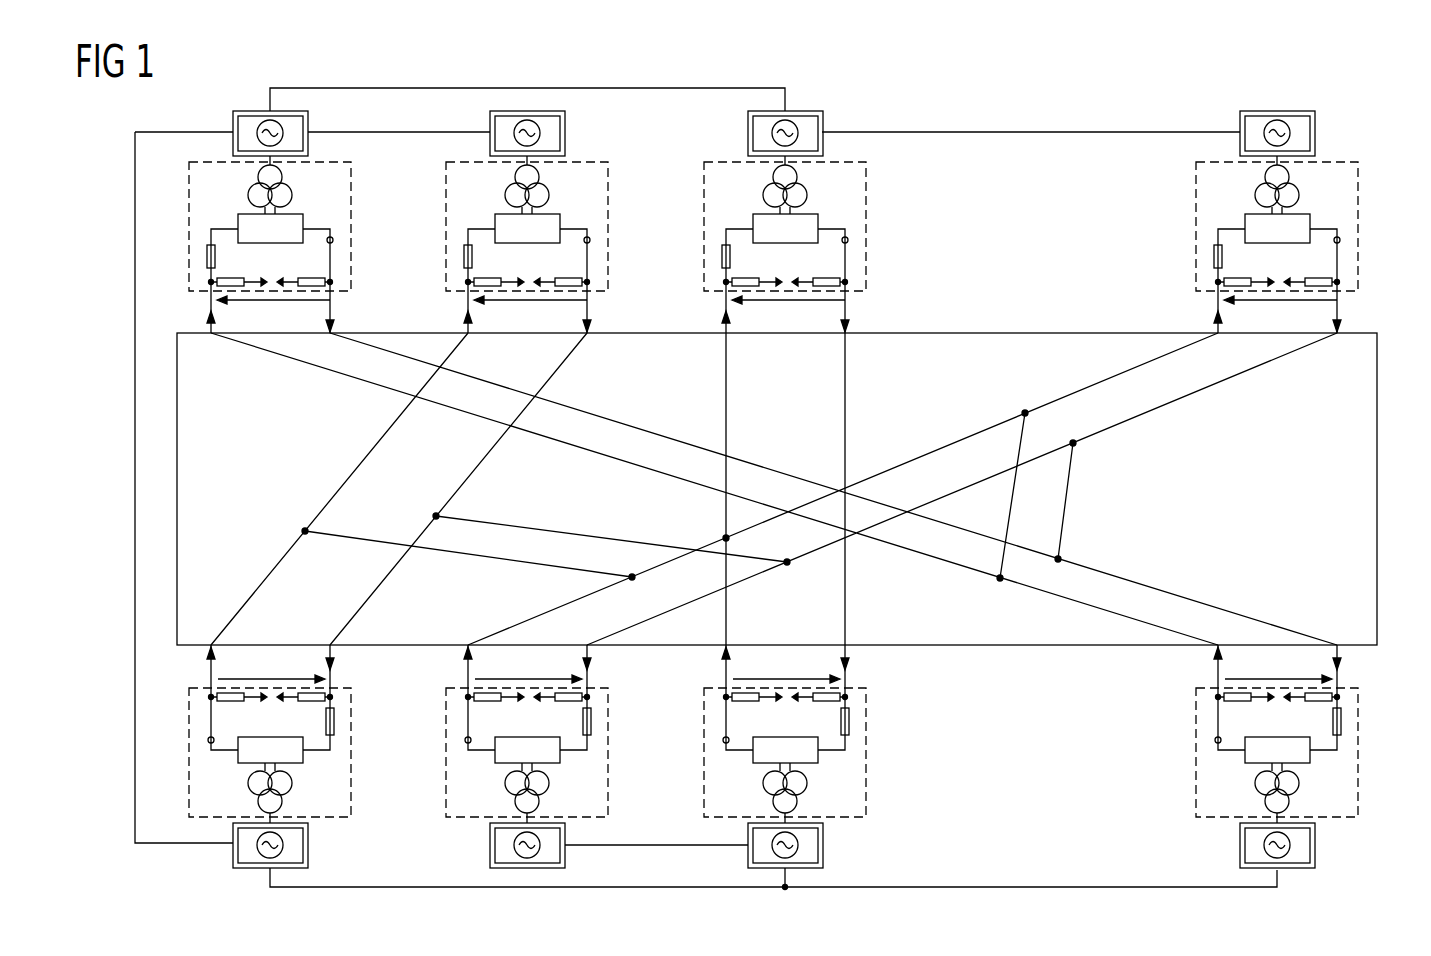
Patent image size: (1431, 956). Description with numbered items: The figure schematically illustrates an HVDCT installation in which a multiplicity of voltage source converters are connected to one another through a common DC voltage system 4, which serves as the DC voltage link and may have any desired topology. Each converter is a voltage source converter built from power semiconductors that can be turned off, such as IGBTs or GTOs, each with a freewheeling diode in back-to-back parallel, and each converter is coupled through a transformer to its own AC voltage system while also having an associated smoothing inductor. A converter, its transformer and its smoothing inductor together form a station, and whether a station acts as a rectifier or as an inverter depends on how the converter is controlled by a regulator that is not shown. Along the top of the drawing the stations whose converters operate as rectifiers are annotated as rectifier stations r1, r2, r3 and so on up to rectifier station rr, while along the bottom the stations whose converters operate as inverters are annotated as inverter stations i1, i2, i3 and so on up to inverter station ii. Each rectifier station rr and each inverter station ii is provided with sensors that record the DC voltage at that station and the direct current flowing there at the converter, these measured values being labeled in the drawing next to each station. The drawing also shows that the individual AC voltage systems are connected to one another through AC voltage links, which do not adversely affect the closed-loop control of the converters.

The DC voltage system 4 is at (903, 425).
The rectifier station r1 is at (302, 242).
The rectifier station r2 is at (559, 242).
The rectifier station r3 is at (817, 242).
The rectifier station rr is at (1305, 242).
The inverter station i1 is at (300, 731).
The inverter station i2 is at (557, 731).
The inverter station i3 is at (815, 731).
The inverter station ii is at (1302, 731).